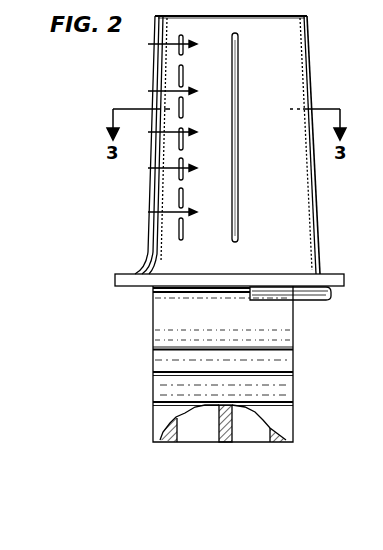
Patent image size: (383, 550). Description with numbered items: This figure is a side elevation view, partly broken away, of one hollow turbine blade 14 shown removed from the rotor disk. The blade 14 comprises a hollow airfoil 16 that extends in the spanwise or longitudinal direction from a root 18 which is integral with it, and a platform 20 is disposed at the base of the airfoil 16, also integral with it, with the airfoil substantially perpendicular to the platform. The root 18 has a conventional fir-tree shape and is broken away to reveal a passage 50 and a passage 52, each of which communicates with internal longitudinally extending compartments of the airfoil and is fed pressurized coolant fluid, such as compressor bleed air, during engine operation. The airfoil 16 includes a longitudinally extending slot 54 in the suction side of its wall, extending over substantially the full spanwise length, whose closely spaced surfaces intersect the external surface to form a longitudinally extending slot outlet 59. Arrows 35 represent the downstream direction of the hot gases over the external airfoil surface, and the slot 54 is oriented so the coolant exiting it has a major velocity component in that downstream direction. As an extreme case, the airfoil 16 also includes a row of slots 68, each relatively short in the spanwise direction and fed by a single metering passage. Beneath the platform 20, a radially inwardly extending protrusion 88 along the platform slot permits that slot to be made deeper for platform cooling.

The blade 14 is at (311, 50).
The hollow airfoil 16 is at (285, 161).
The root 18 is at (153, 362).
The platform 20 is at (115, 279).
The arrows 35 is at (155, 90).
The passage 50 is at (186, 440).
The passage 52 is at (241, 440).
The slot 54 is at (240, 72).
The slot outlet 59 is at (239, 127).
The slots 68 is at (184, 69).
The protrusion 88 is at (305, 301).